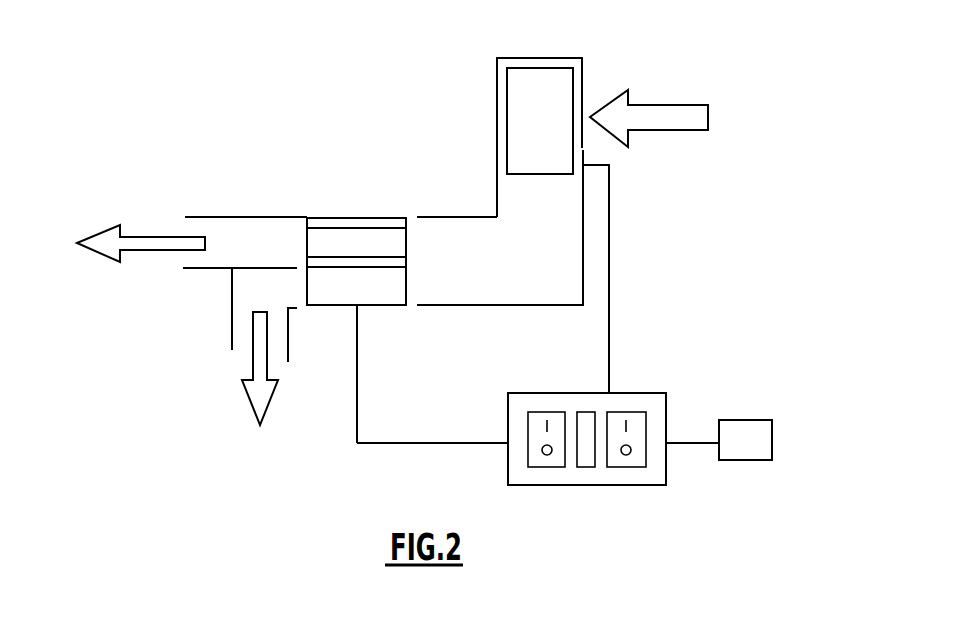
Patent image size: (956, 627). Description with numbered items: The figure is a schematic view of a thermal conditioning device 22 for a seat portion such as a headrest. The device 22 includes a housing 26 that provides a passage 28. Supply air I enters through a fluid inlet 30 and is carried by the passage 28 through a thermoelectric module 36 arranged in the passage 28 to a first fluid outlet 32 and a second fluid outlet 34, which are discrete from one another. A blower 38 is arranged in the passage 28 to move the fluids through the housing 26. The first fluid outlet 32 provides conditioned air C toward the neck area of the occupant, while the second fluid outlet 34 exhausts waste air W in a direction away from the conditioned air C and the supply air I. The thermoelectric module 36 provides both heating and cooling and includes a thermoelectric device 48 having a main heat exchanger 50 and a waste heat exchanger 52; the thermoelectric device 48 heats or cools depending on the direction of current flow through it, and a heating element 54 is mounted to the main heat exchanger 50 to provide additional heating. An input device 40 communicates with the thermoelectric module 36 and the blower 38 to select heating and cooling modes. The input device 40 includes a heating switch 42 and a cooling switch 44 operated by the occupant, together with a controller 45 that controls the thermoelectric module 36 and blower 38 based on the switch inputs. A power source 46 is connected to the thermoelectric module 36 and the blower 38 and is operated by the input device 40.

The thermal conditioning device 22 is at (394, 106).
The fluid inlet 30 is at (583, 92).
The blower 38 is at (530, 162).
The supply air I is at (676, 105).
The housing 26 is at (455, 205).
The passage 28 is at (489, 272).
The first fluid outlet 32 is at (185, 218).
The conditioned air C is at (150, 244).
The thermoelectric module 36 is at (425, 293).
The heating element 54 is at (345, 220).
The main heat exchanger 50 is at (315, 240).
The thermoelectric device 48 is at (378, 263).
The waste heat exchanger 52 is at (340, 292).
The second fluid outlet 34 is at (232, 352).
The waste air W is at (265, 368).
The input device 40 is at (635, 386).
The heating switch 42 is at (540, 467).
The controller 45 is at (587, 412).
The cooling switch 44 is at (627, 467).
The power source 46 is at (740, 420).